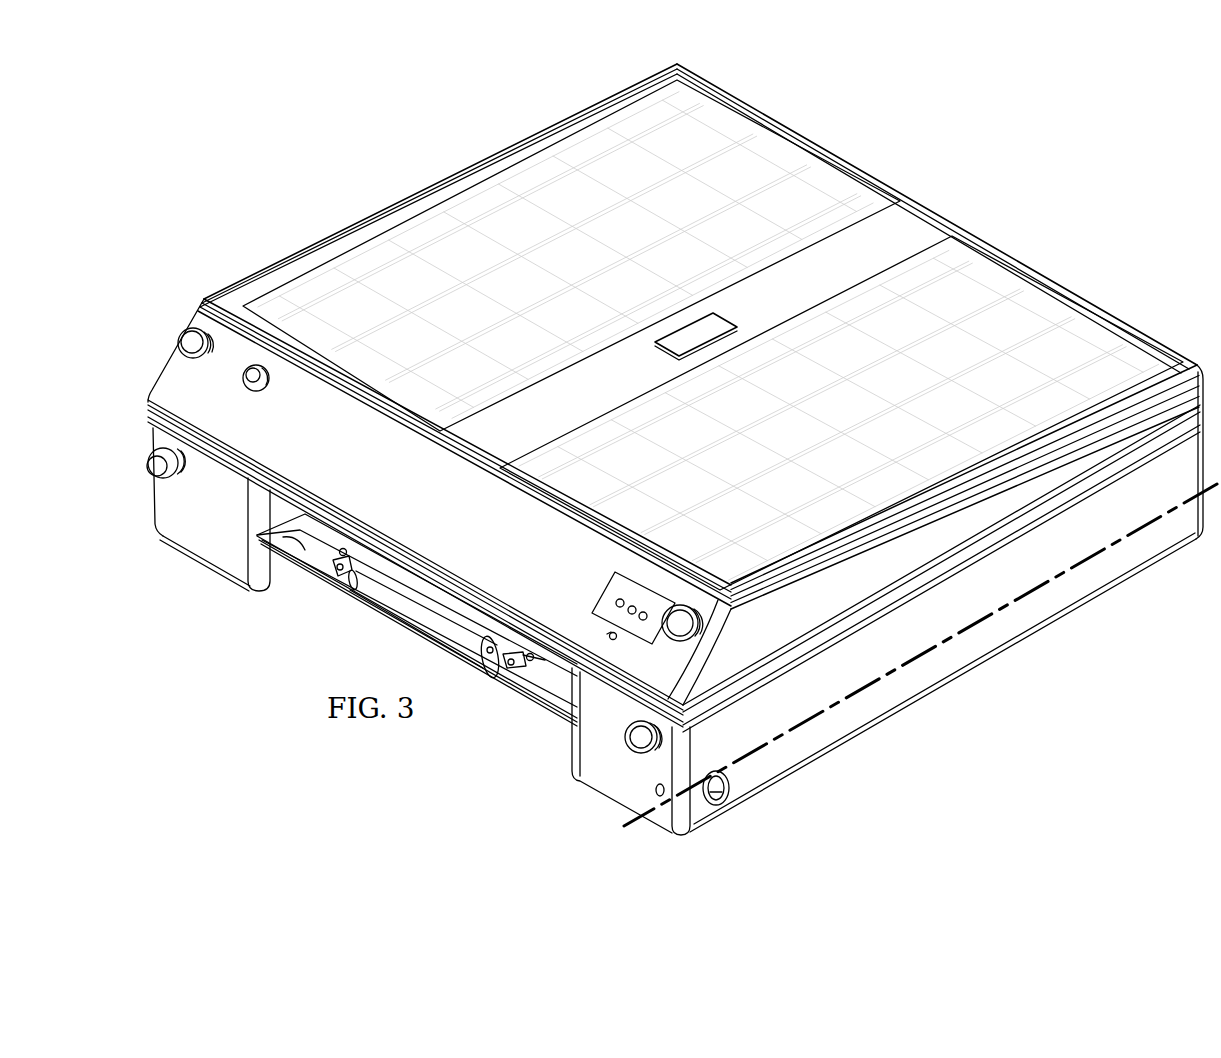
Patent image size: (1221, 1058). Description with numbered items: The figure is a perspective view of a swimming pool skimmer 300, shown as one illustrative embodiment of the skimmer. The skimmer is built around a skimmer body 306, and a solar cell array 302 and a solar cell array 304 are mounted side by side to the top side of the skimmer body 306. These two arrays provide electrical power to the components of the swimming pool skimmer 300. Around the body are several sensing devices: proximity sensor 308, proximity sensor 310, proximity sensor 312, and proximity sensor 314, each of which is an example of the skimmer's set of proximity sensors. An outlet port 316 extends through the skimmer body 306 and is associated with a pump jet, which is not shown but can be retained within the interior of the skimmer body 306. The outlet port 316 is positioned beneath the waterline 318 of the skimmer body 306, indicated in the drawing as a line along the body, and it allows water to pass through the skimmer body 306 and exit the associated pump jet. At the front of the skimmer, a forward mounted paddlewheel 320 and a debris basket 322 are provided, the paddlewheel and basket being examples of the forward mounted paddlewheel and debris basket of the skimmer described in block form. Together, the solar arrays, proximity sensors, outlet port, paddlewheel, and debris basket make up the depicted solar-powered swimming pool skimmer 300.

The swimming pool skimmer 300 is at (405, 116).
The solar cell array 302 is at (764, 142).
The solar cell array 304 is at (1044, 302).
The skimmer body 306 is at (930, 678).
The proximity sensor 308 is at (178, 338).
The proximity sensor 310 is at (166, 456).
The proximity sensor 312 is at (703, 626).
The proximity sensor 314 is at (660, 763).
The outlet port 316 is at (647, 796).
The waterline 318 is at (1077, 560).
The forward mounted paddlewheel 320 is at (330, 540).
The debris basket 322 is at (552, 690).